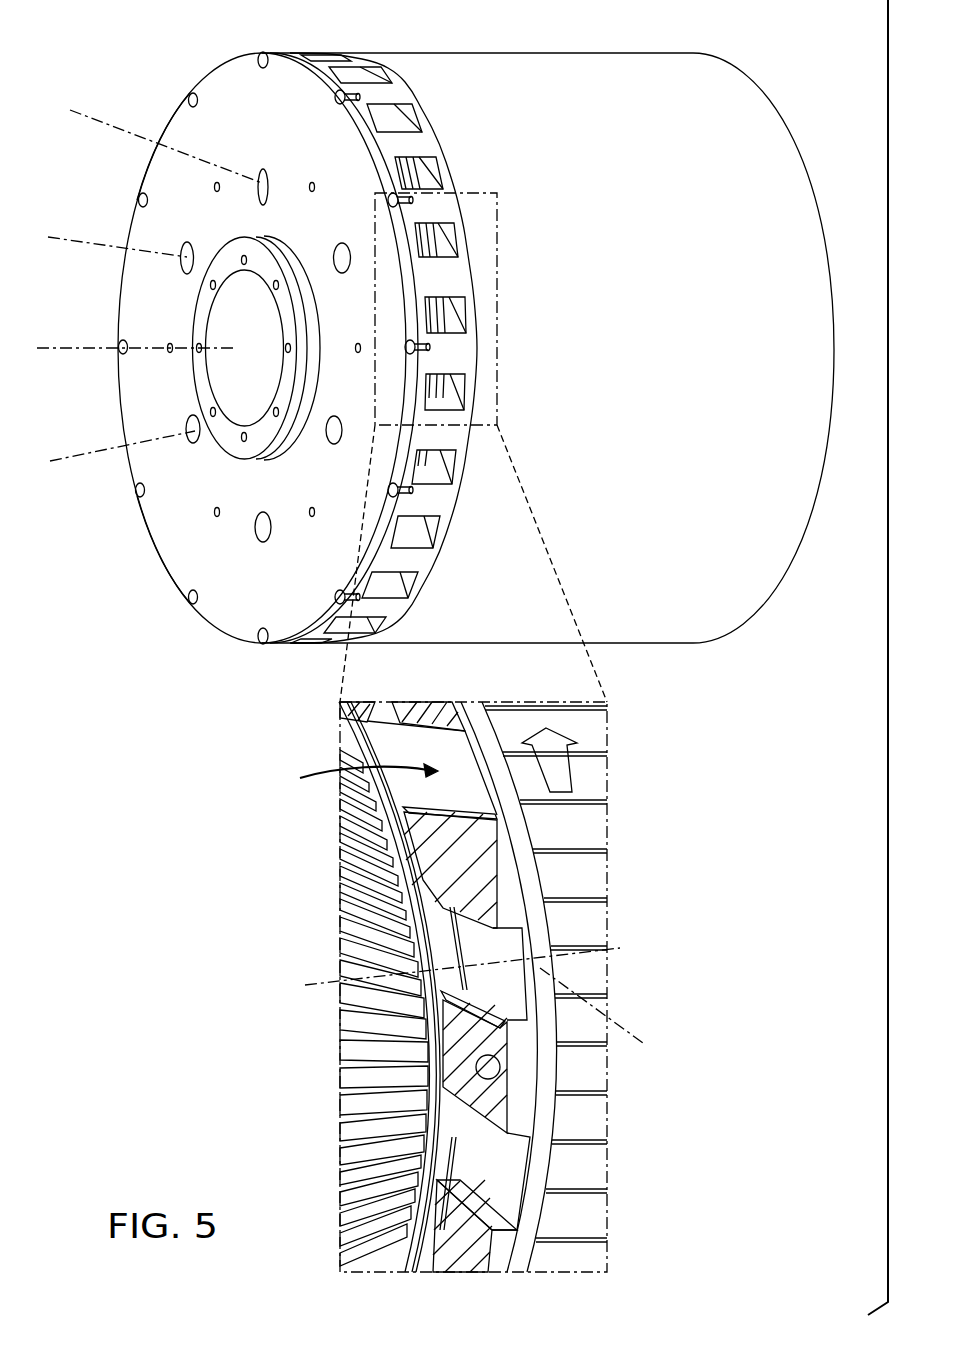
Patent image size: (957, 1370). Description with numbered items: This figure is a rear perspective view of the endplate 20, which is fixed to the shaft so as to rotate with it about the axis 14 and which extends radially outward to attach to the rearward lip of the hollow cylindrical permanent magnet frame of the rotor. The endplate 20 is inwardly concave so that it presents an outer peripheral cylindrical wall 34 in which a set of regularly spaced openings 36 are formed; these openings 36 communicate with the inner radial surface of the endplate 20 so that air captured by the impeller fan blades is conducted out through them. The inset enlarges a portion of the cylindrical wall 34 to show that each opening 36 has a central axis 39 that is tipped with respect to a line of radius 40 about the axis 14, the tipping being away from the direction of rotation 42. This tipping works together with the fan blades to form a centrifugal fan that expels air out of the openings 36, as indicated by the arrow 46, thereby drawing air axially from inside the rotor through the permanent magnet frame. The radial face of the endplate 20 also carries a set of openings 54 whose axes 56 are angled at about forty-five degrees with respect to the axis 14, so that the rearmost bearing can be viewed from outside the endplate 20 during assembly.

The axis 14 is at (107, 347).
The endplate 20 is at (237, 75).
The outer peripheral cylindrical wall 34 is at (420, 140).
The openings 36 is at (385, 118).
The central axis 39 is at (592, 1018).
The line of radius 40 is at (572, 957).
The direction of rotation 42 is at (568, 750).
The arrow 46 is at (392, 768).
The openings 54 is at (185, 250).
The axes 56 is at (100, 247).